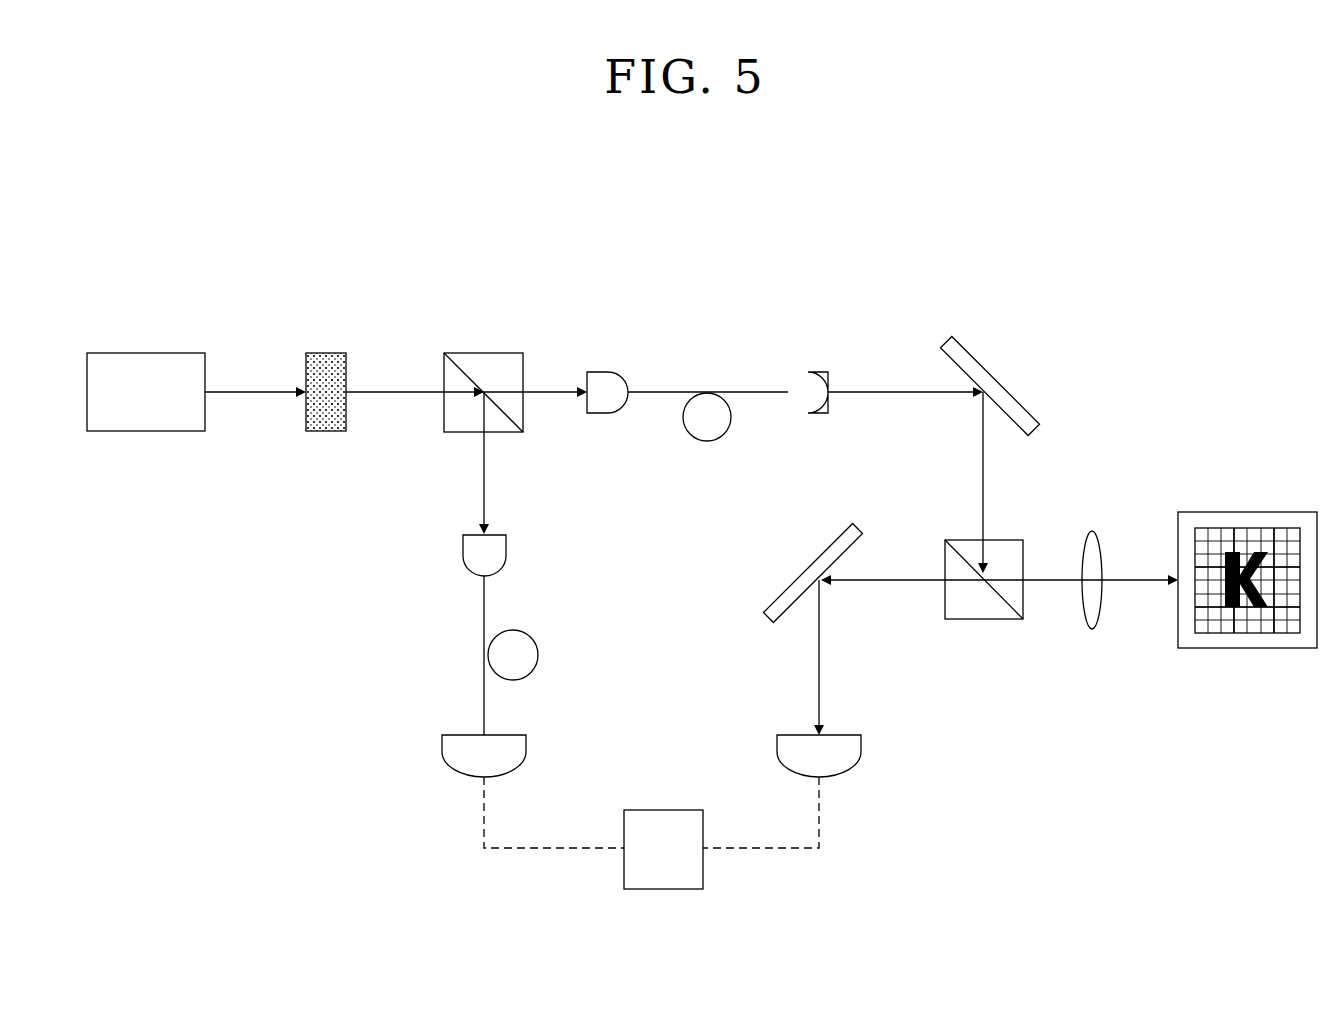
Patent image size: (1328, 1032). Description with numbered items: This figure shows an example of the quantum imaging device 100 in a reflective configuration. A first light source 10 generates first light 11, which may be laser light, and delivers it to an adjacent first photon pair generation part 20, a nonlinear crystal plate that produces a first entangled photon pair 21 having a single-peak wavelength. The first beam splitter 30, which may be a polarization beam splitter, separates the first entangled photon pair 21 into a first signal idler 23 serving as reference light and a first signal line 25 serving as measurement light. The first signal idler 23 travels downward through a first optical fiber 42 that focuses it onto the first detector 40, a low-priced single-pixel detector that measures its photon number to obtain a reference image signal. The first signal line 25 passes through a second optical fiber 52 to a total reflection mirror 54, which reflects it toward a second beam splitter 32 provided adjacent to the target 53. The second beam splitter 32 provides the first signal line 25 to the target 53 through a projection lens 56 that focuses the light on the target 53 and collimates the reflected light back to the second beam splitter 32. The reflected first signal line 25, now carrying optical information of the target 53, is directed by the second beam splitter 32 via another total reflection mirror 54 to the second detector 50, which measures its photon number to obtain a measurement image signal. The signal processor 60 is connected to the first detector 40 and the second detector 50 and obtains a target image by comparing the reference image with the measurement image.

The first light source 10 is at (168, 353).
The first light 11 is at (253, 387).
The first photon pair generation part 20 is at (325, 353).
The first entangled photon pair 21 is at (383, 389).
The first beam splitter 30 is at (492, 353).
The first signal line 25 is at (556, 389).
The first signal idler 23 is at (483, 474).
The second optical fiber 52 is at (707, 443).
The total reflection mirror 54 is at (997, 368).
The second beam splitter 32 is at (1000, 540).
The projection lens 56 is at (1092, 531).
The target 53 is at (1259, 528).
The first optical fiber 42 is at (538, 655).
The first detector 40 is at (526, 743).
The second detector 50 is at (861, 743).
The signal processor 60 is at (683, 810).
The quantum imaging device 100 is at (1242, 296).